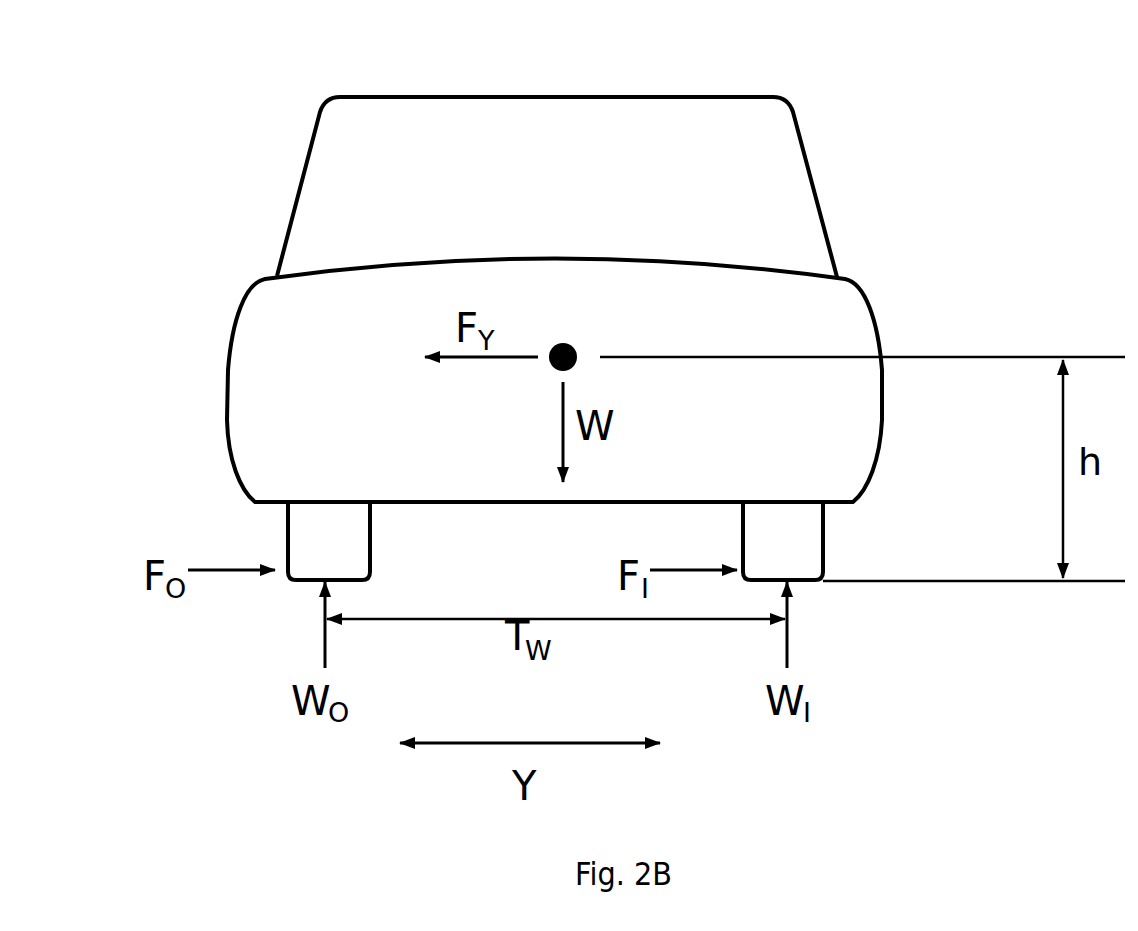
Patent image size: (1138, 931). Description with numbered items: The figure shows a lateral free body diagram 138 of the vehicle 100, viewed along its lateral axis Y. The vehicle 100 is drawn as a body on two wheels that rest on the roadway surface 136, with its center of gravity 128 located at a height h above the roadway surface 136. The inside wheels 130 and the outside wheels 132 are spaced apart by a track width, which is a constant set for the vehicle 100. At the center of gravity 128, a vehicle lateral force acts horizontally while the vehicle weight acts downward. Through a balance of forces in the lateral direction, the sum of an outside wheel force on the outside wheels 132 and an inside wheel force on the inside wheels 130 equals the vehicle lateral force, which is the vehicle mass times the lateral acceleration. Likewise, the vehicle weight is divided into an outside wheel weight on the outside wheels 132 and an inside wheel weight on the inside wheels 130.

The vehicle 100 is at (507, 259).
The lateral free body diagram 138 is at (188, 190).
The center of gravity 128 is at (578, 352).
The outside wheels 132 is at (237, 545).
The inside wheels 130 is at (837, 553).
The roadway surface 136 is at (930, 582).